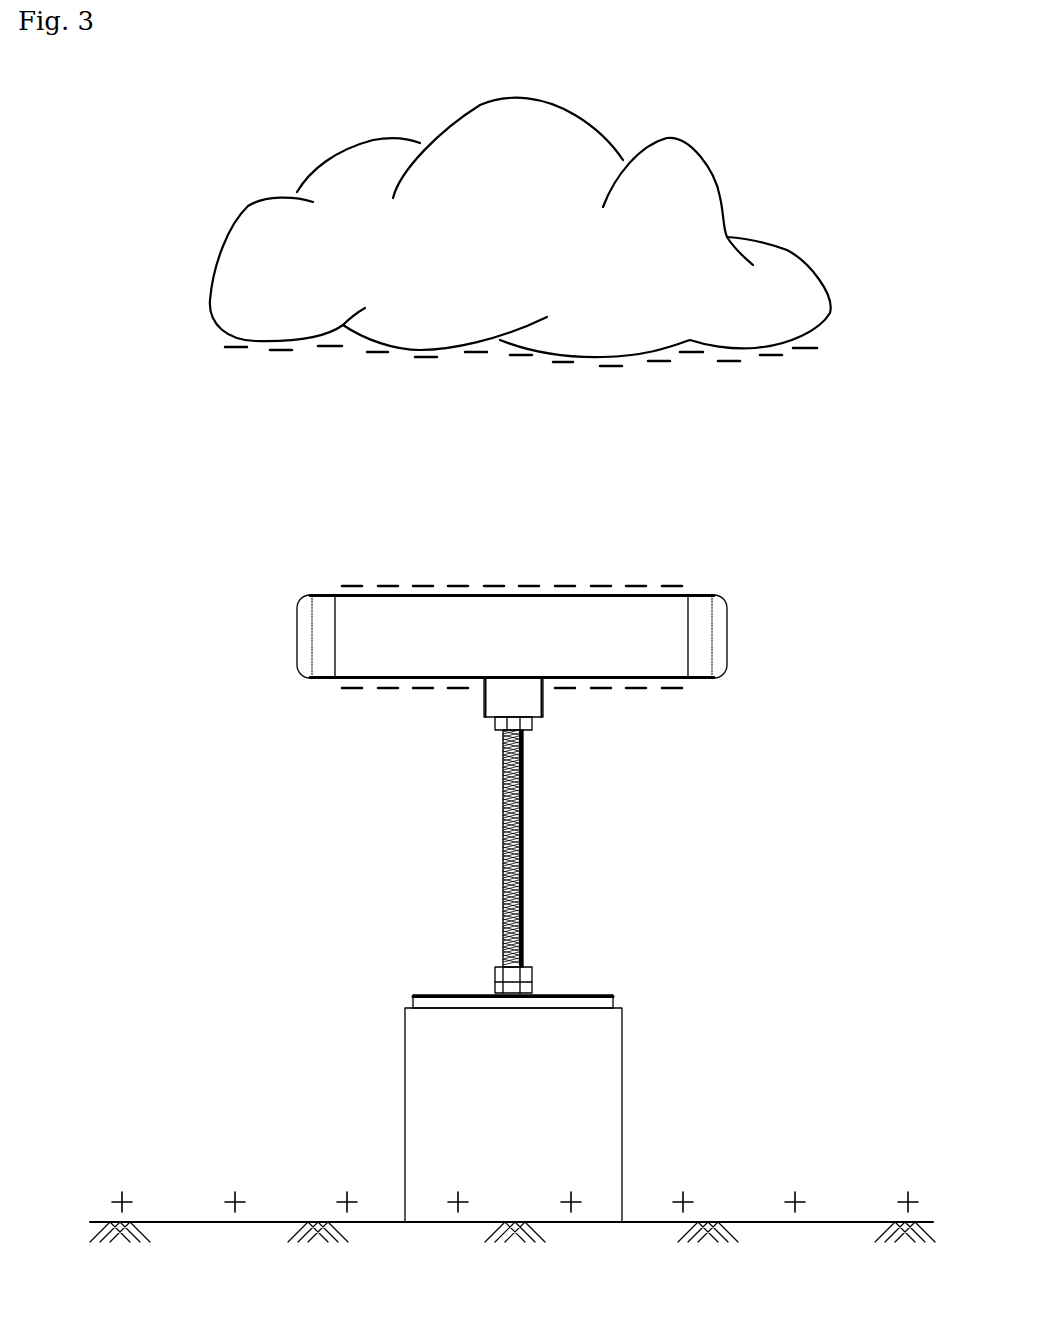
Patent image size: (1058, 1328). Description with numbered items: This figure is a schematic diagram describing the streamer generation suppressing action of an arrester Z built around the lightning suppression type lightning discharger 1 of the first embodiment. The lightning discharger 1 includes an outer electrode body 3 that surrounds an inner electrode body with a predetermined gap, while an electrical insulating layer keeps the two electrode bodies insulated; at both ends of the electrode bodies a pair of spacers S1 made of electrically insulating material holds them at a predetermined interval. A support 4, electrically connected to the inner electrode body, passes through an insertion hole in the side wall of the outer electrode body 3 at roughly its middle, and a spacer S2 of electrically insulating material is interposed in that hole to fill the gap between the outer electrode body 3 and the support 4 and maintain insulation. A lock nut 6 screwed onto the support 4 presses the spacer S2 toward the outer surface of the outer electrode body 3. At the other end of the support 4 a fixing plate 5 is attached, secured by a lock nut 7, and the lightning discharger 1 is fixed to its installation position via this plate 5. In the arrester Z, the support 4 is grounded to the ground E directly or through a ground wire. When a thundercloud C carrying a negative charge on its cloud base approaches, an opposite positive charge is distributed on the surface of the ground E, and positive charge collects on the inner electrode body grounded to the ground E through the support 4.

The thundercloud C is at (263, 228).
The spacer S1 is at (299, 660).
The lightning suppression type lightning discharger 1 is at (549, 696).
The outer electrode body 3 is at (376, 682).
The spacer S2 is at (484, 697).
The lock nut 6 is at (533, 727).
The support 4 is at (523, 865).
The lock nut 7 is at (493, 983).
The fixing plate 5 is at (613, 998).
The arrester Z is at (647, 1042).
The ground E is at (183, 1222).